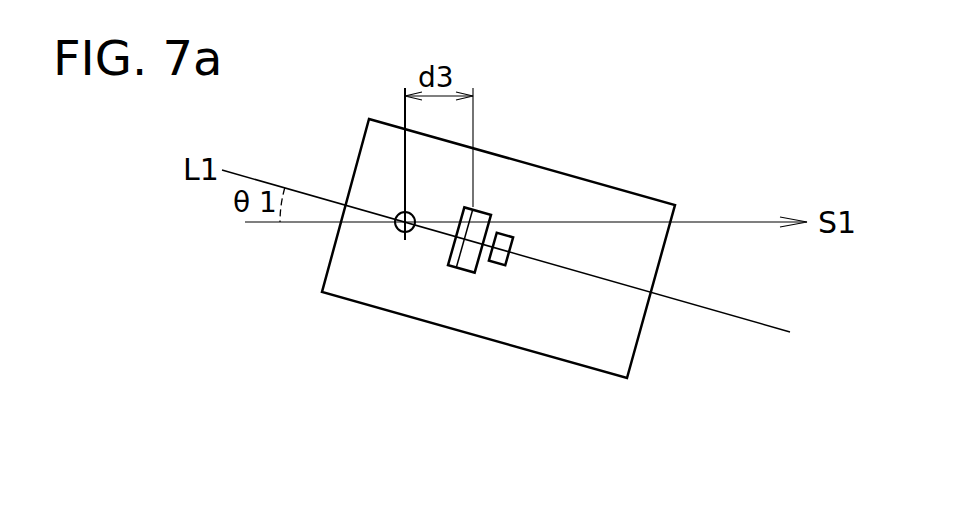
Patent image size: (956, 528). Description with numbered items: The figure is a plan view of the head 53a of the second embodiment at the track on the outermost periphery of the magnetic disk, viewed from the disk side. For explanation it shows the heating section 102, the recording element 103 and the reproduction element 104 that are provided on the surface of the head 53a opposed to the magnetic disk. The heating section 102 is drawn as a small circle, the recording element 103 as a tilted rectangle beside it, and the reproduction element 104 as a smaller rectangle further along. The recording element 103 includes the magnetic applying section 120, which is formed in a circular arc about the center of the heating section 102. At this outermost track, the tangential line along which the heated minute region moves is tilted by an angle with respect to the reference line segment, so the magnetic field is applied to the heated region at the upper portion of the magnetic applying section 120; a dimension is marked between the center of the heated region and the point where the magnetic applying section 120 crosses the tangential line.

The head 53a is at (608, 204).
The heating section 102 is at (397, 231).
The recording element 103 is at (466, 273).
The reproduction element 104 is at (497, 266).
The magnetic applying section 120 is at (455, 252).